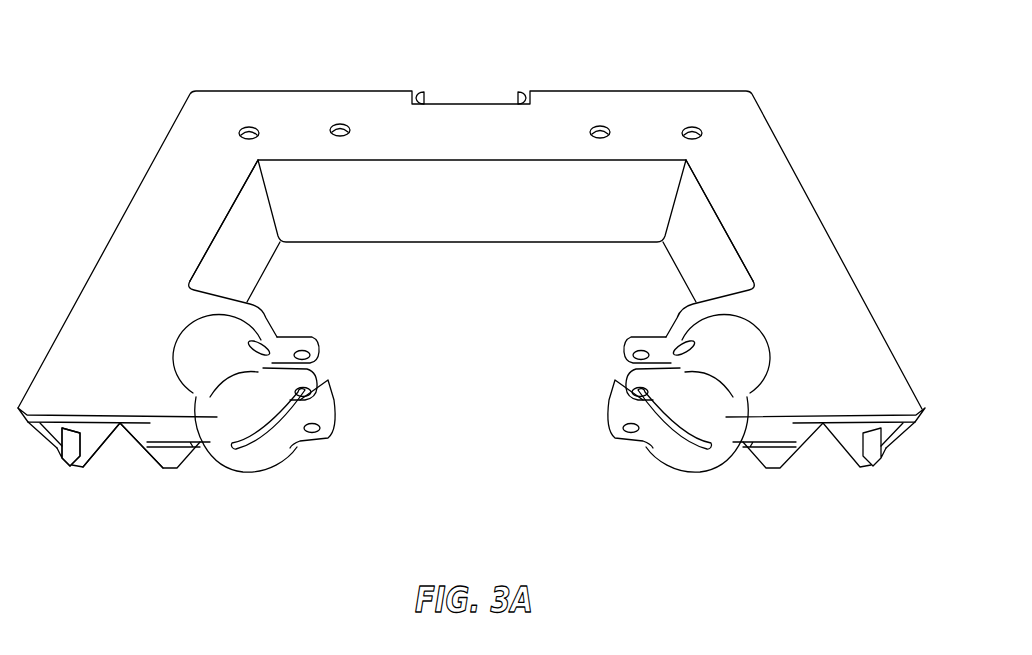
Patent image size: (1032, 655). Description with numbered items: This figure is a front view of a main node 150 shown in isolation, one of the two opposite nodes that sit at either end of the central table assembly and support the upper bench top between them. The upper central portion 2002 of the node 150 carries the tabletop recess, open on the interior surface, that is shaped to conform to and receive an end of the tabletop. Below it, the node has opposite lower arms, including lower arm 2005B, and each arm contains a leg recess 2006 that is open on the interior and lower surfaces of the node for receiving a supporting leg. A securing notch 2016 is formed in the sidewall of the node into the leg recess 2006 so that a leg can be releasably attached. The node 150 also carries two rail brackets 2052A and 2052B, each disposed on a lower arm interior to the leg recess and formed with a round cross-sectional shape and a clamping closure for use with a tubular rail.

The main node 150 is at (308, 83).
The upper central portion 2002 is at (643, 117).
The lower arm 2005B is at (775, 247).
The leg recess 2006 is at (130, 468).
The securing notch 2016 is at (68, 465).
The rail bracket 2052A is at (232, 388).
The rail bracket 2052B is at (725, 372).